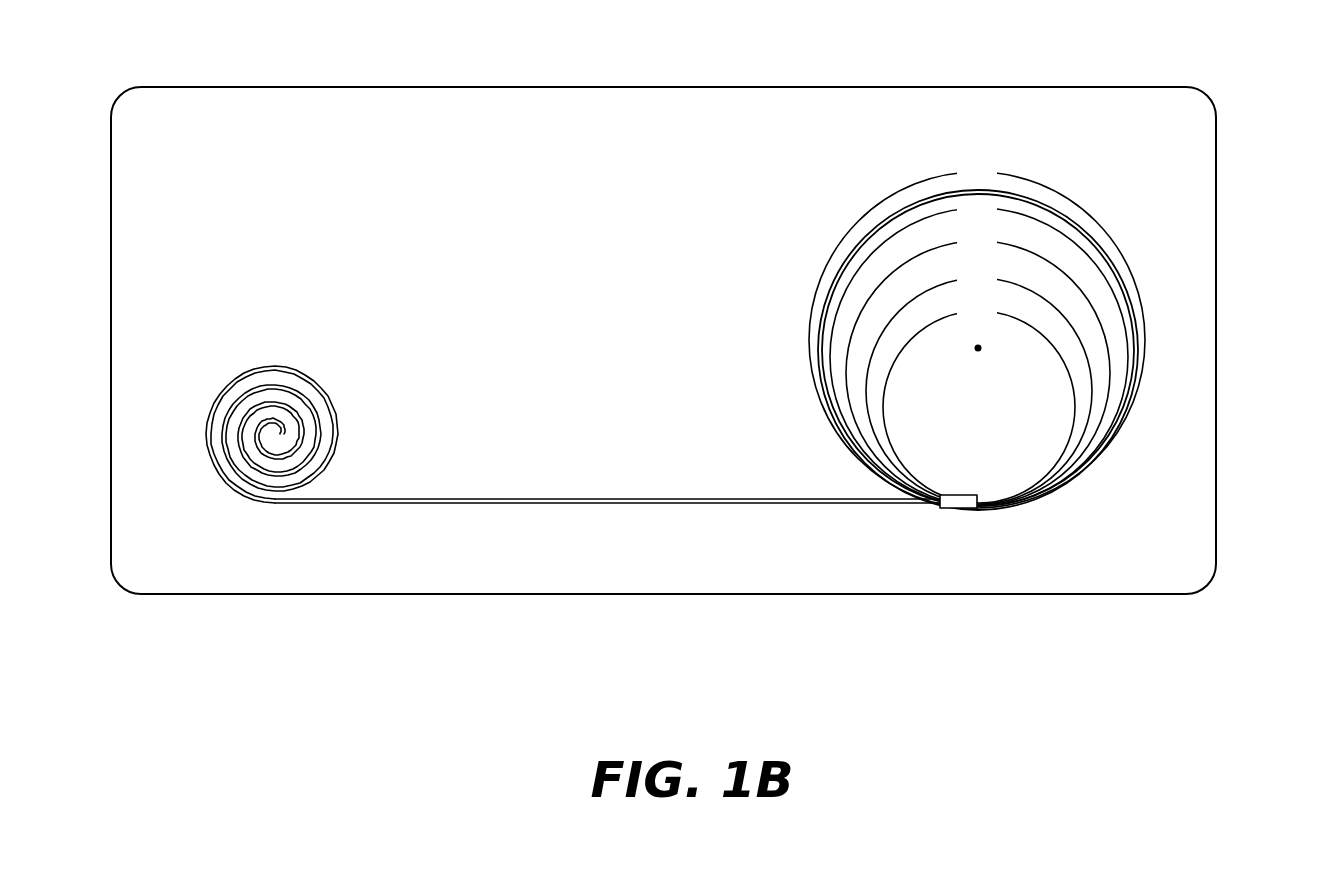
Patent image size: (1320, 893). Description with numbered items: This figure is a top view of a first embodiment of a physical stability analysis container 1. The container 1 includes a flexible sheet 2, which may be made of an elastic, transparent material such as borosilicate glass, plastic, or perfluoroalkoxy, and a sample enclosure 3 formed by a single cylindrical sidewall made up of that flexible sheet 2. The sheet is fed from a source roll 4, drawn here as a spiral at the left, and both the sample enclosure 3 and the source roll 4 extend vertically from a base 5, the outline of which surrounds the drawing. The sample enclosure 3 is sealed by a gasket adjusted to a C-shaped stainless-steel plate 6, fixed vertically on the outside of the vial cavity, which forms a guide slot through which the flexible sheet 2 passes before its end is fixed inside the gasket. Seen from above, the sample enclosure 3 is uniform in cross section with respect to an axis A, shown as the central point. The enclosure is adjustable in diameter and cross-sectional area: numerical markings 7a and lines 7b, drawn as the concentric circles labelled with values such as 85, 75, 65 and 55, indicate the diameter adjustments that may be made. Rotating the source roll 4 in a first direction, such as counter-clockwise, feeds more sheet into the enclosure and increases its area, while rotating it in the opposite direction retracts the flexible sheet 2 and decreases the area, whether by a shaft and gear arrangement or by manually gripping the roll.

The physical stability analysis container 1 is at (290, 652).
The flexible sheet 2 is at (597, 504).
The sample enclosure 3 is at (1006, 266).
The source roll 4 is at (210, 398).
The base 5 is at (258, 102).
The C-shaped stainless-steel plate 6 is at (955, 502).
The numerical markings 7a is at (987, 168).
The lines 7b is at (1088, 210).
The axis A is at (978, 348).
The 85 mm coil 85 is at (979, 357).
The 75 mm coil 75 is at (978, 373).
The 65 mm coil 65 is at (979, 391).
The 55 mm coil 55 is at (979, 407).